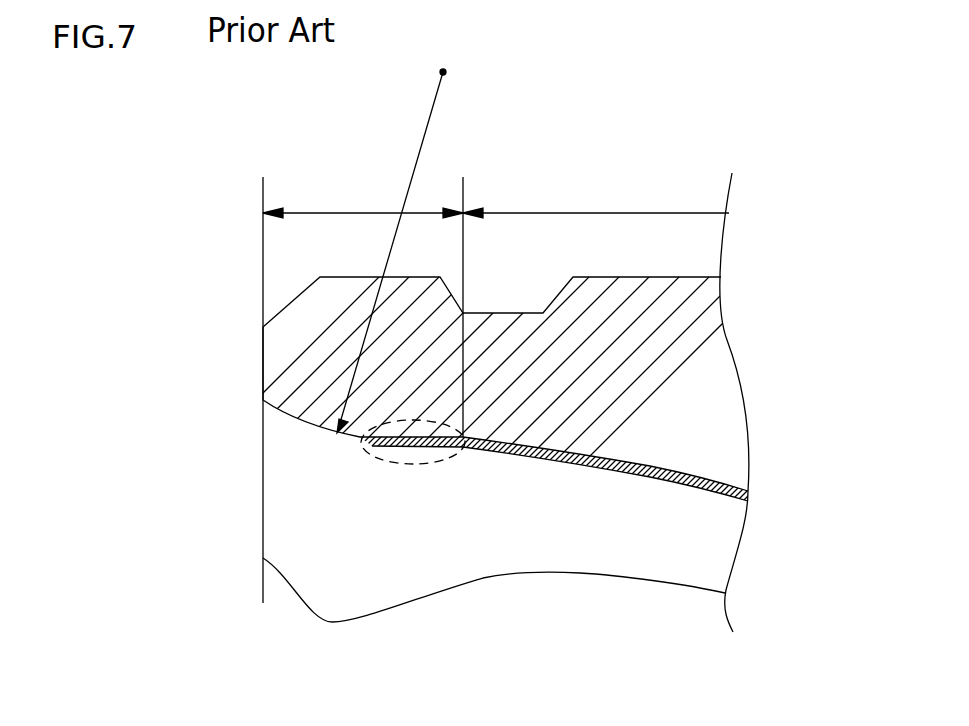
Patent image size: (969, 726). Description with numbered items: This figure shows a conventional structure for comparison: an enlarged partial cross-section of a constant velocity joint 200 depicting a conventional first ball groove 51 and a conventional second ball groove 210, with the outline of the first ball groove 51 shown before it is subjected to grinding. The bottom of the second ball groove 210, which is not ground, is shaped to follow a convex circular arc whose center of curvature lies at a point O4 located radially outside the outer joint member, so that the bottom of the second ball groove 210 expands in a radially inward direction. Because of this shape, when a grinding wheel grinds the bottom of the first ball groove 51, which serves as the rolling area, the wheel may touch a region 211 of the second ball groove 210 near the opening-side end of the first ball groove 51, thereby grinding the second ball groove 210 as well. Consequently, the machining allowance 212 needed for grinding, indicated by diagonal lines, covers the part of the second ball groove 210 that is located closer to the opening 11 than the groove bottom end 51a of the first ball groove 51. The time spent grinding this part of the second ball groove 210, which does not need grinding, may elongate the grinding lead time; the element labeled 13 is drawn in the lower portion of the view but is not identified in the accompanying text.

The center of curvature O4 is at (443, 72).
The prior art nozzle plate assembly 200 is at (229, 265).
The nozzle plate 11 is at (263, 362).
The land portion 210 is at (357, 213).
The liquid repellent film 51 is at (620, 213).
The surface of liquid repellent film 51a is at (455, 447).
The edge portion 211 is at (397, 462).
The thin film portion 212 is at (650, 467).
The adhesive layer 13 is at (628, 543).